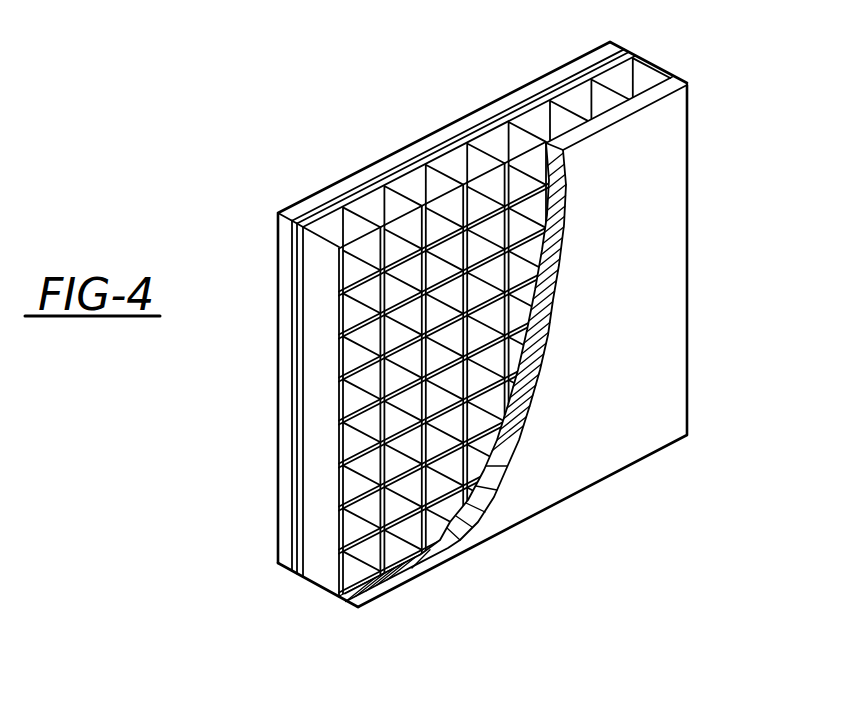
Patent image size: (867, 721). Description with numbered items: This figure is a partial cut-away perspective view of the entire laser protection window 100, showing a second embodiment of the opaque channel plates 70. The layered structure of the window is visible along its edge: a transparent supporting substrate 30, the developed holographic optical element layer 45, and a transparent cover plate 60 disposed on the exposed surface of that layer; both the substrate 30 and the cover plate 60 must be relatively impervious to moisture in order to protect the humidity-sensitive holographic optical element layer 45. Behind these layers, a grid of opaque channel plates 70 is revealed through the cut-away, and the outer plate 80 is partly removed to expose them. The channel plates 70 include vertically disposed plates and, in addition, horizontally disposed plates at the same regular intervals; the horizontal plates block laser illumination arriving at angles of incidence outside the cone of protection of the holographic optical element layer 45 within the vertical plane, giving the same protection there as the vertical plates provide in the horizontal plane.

The transparent supporting substrate 30 is at (288, 580).
The holographic optical element layer 45 is at (294, 577).
The transparent cover plate 60 is at (298, 572).
The opaque channel plates 70 is at (213, 0).
The back plate 80 is at (676, 78).
The laser protection window 100 is at (712, 325).